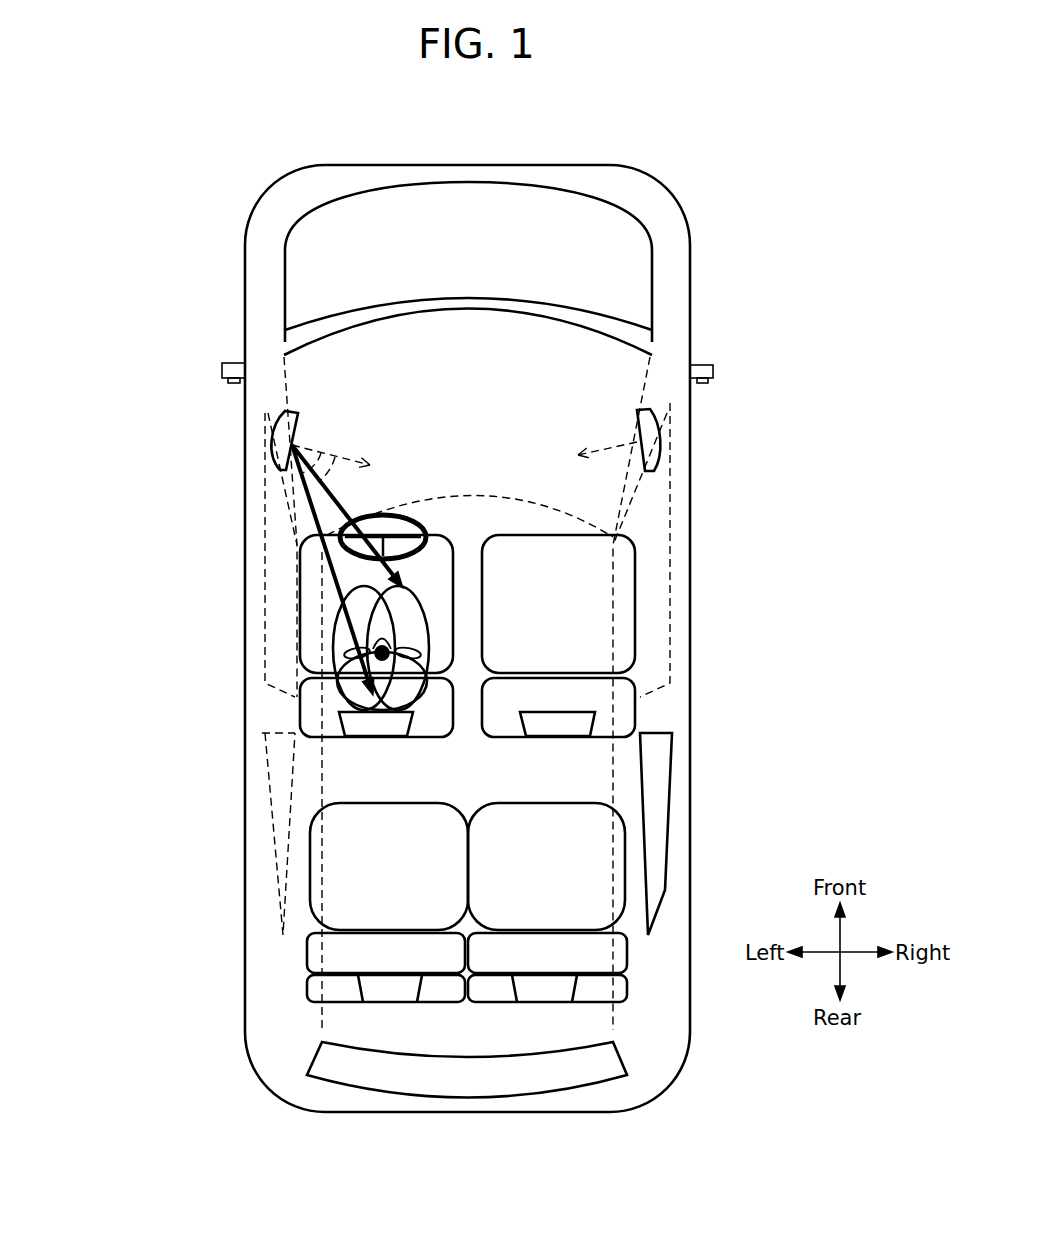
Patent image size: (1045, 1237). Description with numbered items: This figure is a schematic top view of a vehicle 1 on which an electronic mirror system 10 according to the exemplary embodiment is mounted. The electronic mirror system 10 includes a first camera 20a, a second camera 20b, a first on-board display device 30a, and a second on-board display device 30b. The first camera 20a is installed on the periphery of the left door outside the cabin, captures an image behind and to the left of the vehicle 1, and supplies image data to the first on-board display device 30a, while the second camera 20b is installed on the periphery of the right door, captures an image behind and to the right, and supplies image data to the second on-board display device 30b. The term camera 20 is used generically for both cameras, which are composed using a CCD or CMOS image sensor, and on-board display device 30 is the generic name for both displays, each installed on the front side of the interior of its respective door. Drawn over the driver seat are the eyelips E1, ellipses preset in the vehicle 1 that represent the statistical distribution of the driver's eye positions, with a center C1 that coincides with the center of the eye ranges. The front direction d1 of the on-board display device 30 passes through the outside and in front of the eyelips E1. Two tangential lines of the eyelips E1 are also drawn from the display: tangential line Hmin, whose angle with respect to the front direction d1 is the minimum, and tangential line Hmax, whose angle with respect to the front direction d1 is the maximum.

The vehicle 1 is at (712, 225).
The electronic mirror system 10 is at (468, 404).
The camera 20 is at (466, 363).
The first camera 20a is at (222, 370).
The second camera 20b is at (713, 372).
The on-board display device 30 is at (466, 439).
The first on-board display device 30a is at (290, 411).
The second on-board display device 30b is at (650, 410).
The front direction d1 is at (464, 462).
The tangential line Hmin is at (345, 520).
The tangential line Hmax is at (345, 578).
The eyelips E1 is at (340, 642).
The center C1 is at (393, 658).